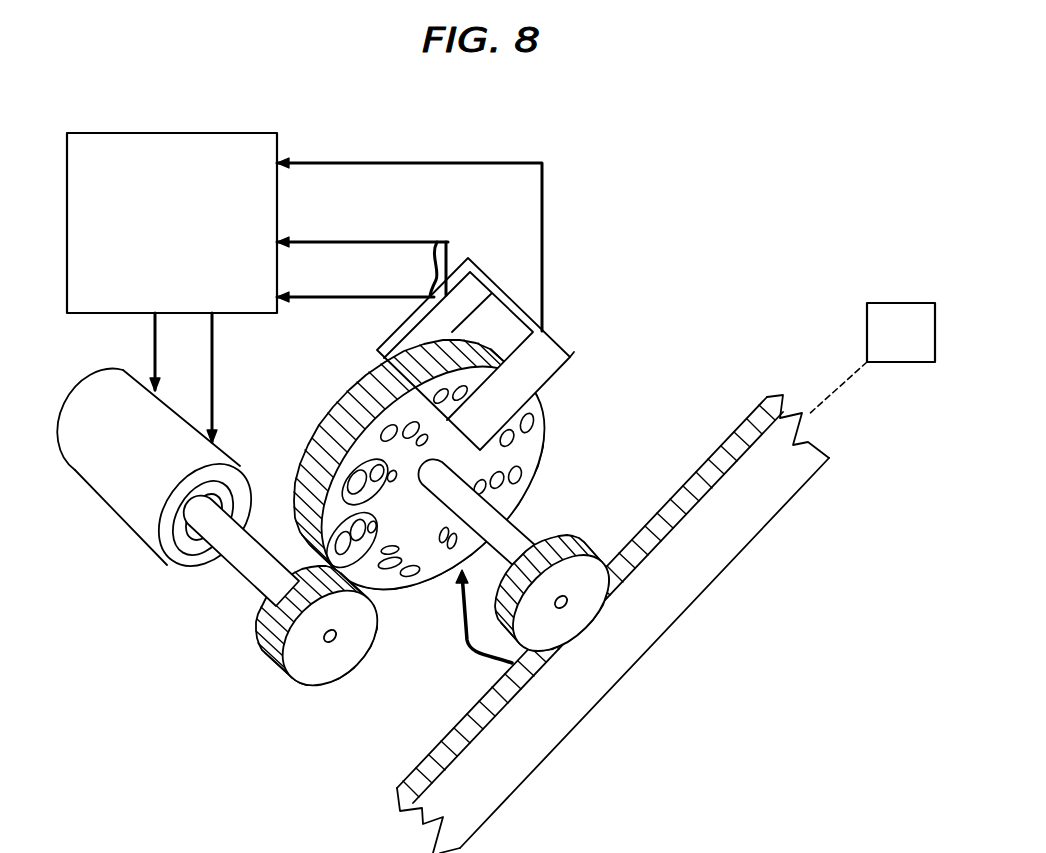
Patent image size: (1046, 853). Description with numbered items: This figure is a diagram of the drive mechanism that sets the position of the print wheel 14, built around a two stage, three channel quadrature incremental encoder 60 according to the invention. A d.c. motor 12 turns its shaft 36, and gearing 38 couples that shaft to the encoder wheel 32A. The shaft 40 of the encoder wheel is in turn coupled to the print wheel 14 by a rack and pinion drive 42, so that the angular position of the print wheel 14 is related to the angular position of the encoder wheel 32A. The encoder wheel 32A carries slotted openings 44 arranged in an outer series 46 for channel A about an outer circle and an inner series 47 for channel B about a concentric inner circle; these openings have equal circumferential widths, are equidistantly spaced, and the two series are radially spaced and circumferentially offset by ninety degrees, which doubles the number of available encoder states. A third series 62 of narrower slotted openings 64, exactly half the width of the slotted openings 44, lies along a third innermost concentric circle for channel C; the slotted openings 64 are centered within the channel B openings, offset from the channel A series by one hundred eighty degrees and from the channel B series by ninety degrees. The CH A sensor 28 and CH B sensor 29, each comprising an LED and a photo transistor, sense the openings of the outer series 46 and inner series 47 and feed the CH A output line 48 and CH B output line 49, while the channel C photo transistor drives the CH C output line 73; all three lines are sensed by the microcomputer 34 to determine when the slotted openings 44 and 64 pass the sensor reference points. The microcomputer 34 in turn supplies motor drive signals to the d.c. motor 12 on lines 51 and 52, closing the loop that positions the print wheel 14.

The d.c. motor 12 is at (120, 517).
The print wheel 14 is at (878, 303).
The CH A sensor 28 is at (574, 351).
The CH B sensor 29 is at (485, 268).
The encoder wheel 32A is at (434, 478).
The microcomputer 34 is at (168, 133).
The shaft 36 is at (233, 575).
The gearing 38 is at (295, 690).
The shaft 40 is at (517, 530).
The rack and pinion drive 42 is at (600, 632).
The slotted openings 44 is at (378, 468).
The outer series 46 is at (380, 420).
The inner series 47 is at (407, 417).
The CH A output line 48 is at (443, 163).
The CH B output line 49 is at (420, 240).
The motor drive line 51 is at (153, 323).
The motor drive line 52 is at (213, 322).
The encoder 60 is at (652, 395).
The third series 62 is at (407, 448).
The slotted openings 64 is at (380, 464).
The CH C output line 73 is at (447, 242).